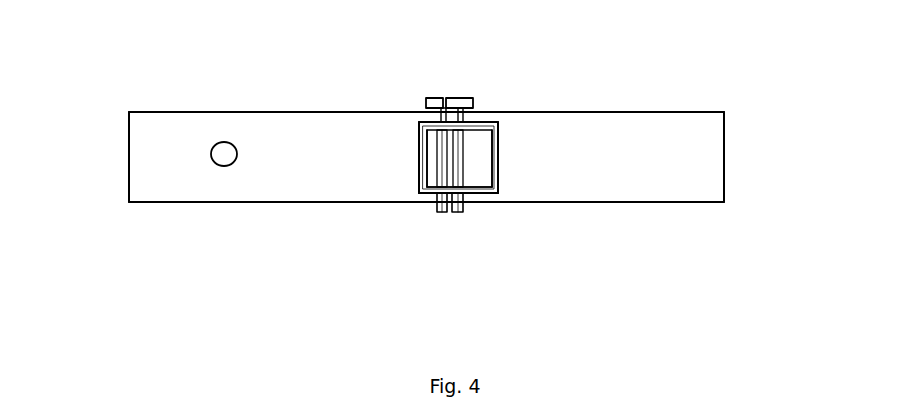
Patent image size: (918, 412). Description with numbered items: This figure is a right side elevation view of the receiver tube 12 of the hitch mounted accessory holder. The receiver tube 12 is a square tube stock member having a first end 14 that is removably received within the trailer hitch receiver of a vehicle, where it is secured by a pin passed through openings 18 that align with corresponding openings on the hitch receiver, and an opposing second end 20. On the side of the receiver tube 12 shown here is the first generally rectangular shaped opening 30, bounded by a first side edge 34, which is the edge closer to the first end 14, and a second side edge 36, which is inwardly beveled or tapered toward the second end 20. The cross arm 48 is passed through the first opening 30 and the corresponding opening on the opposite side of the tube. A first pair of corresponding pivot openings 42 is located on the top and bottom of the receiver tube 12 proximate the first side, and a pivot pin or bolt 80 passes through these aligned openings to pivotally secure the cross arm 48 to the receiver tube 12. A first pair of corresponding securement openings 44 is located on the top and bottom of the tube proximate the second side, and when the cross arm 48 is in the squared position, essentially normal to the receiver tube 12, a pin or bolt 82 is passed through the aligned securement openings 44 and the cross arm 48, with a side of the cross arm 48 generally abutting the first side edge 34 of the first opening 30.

The receiver tube 12 is at (638, 103).
The first end 14 is at (129, 165).
The second end 20 is at (725, 146).
The openings 18 is at (222, 150).
The first generally rectangular shaped opening 30 is at (478, 164).
The first side edge 34 is at (419, 145).
The second side edge 36 is at (498, 147).
The cross arm 48 is at (489, 196).
The pin or bolt 82 is at (438, 98).
The pivot pin or bolt 80 is at (462, 98).
The first pair of corresponding securement openings 44 is at (423, 110).
The first pair of corresponding pivot openings 42 is at (478, 109).